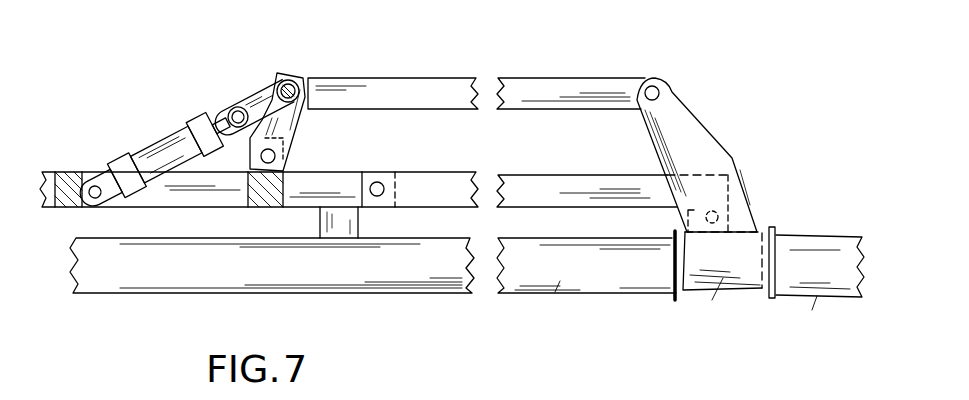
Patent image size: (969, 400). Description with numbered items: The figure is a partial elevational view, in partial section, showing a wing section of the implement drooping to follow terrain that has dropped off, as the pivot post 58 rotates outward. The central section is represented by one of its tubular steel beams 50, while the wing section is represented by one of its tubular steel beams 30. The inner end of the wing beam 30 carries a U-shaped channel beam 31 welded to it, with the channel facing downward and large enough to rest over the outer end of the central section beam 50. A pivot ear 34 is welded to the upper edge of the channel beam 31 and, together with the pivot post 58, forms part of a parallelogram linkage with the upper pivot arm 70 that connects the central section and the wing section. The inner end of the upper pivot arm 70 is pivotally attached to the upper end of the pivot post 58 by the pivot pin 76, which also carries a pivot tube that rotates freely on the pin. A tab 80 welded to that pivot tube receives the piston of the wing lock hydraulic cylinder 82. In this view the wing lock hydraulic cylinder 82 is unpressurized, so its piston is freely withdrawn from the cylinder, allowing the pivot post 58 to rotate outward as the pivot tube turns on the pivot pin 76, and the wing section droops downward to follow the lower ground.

The tubular steel beam 30 is at (565, 182).
The U-shaped channel beam 31 is at (723, 277).
The pivot ear 34 is at (695, 125).
The tubular steel beam 50 is at (560, 280).
The pivot post 58 is at (292, 76).
The upper pivot arm 70 is at (413, 82).
The pivot pin 76 is at (297, 80).
The tab 80 is at (250, 105).
The wing lock hydraulic cylinder 82 is at (180, 138).